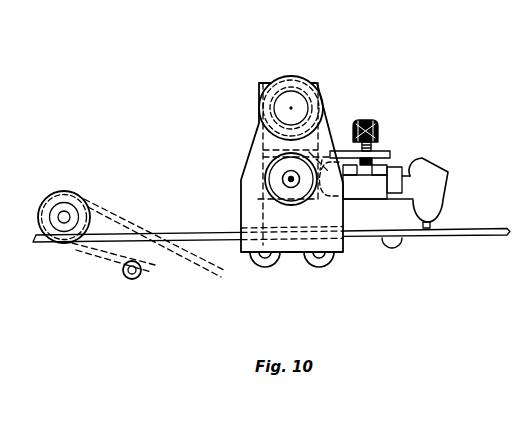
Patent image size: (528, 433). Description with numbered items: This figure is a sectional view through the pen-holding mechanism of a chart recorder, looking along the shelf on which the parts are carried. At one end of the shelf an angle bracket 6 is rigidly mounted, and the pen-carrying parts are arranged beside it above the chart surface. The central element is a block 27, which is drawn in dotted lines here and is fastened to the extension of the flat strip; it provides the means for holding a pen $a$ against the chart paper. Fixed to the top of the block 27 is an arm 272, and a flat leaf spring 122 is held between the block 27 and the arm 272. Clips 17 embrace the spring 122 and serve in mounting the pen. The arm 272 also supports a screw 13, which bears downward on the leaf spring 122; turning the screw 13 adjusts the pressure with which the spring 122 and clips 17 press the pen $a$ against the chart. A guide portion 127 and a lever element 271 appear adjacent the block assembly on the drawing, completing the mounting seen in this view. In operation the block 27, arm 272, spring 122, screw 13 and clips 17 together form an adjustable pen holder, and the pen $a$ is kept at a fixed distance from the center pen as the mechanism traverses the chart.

The angle bracket 6 is at (249, 181).
The guide bore 127 is at (322, 160).
The flat spring 122 is at (366, 118).
The block 27 is at (333, 150).
The screw 13 is at (377, 138).
The arm 272 is at (387, 152).
The locking lever 271 is at (420, 158).
The pen a is at (432, 225).
The clips 17 is at (393, 183).